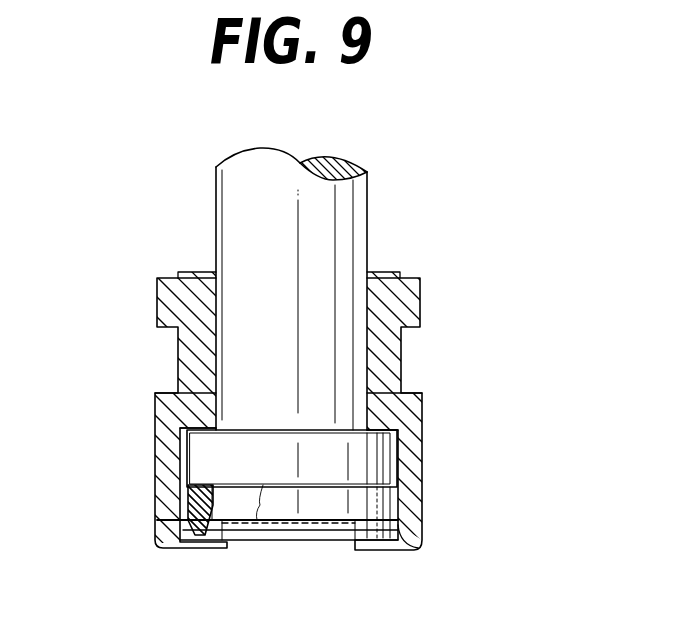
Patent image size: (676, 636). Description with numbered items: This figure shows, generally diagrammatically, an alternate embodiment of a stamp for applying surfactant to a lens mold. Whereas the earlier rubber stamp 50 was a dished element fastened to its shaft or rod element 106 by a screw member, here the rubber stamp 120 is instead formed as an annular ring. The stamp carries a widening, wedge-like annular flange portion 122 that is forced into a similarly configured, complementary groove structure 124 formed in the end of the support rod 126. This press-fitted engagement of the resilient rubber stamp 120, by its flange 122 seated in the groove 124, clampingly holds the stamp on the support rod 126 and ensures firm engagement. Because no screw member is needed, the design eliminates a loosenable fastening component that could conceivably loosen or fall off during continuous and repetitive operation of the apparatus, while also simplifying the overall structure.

The rubber stamp 50 is at (146, 485).
The shaft or rod element 106 is at (367, 232).
The rubber stamp 120 is at (377, 502).
The wedge-like annular flange portion 122 is at (187, 497).
The groove structure 124 is at (213, 493).
The support rod 126 is at (397, 525).